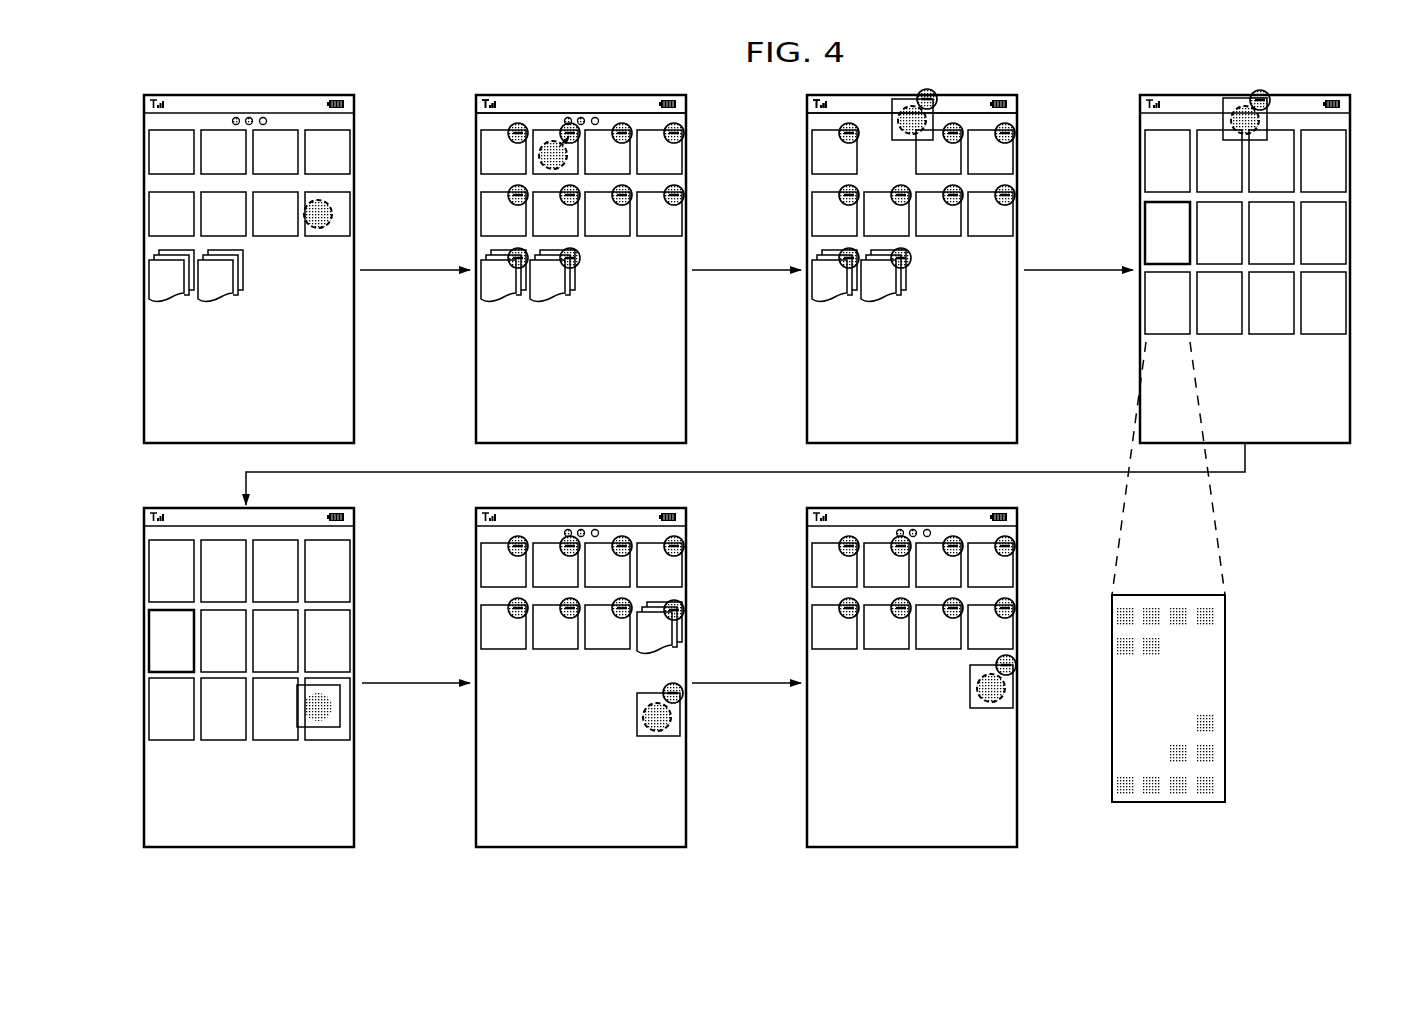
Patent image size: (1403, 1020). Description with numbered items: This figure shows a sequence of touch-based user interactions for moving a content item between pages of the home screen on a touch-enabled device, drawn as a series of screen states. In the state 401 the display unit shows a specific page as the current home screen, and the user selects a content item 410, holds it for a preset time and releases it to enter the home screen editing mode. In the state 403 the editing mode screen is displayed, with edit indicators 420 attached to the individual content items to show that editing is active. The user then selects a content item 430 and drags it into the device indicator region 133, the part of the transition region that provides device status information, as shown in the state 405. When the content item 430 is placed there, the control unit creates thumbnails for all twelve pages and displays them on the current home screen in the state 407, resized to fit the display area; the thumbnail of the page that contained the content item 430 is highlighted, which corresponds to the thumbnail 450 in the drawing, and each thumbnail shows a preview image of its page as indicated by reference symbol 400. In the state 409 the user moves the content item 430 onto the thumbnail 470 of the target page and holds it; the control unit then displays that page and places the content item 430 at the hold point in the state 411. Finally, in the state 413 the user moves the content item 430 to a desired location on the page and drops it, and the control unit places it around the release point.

The device indicator region 133 is at (685, 100).
The thumbnail preview image 400 is at (1232, 675).
The home screen state 401 is at (249, 255).
The editing mode screen state 403 is at (581, 255).
The content item moving state 405 is at (912, 255).
The thumbnail display state 407 is at (1245, 255).
The thumbnail hold state 409 is at (249, 691).
The target page display state 411 is at (581, 691).
The content item drop state 413 is at (912, 691).
The content item 410 is at (342, 212).
The edit indicator 420 is at (628, 124).
The content item 430 is at (541, 131).
The page thumbnail 450 is at (1152, 245).
The thumbnail 470 is at (1340, 310).